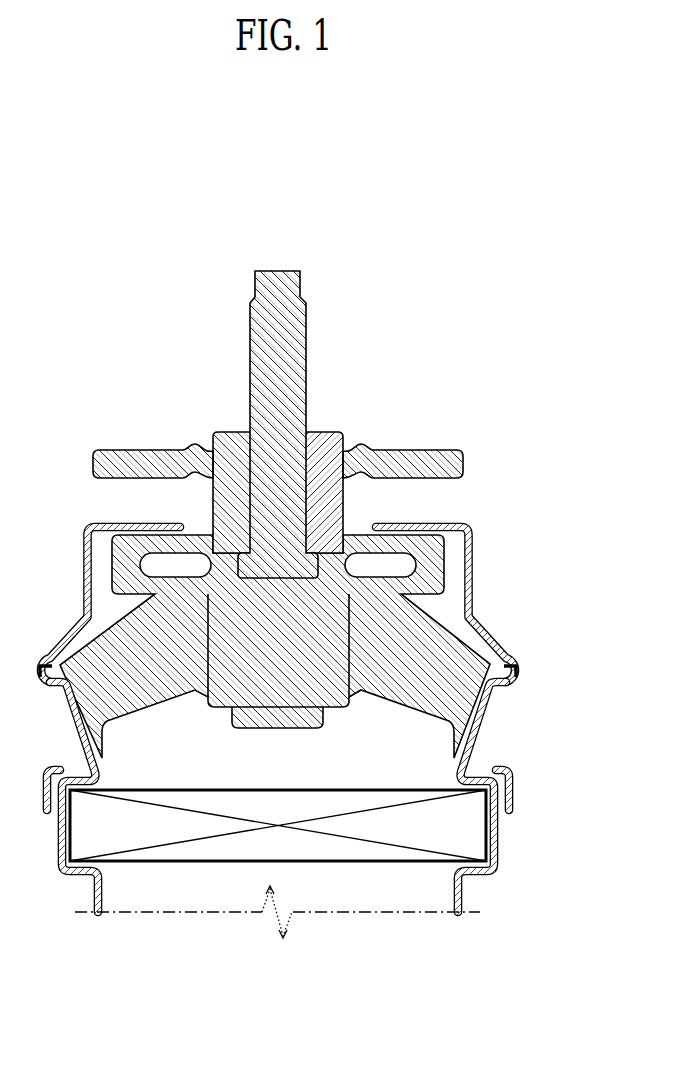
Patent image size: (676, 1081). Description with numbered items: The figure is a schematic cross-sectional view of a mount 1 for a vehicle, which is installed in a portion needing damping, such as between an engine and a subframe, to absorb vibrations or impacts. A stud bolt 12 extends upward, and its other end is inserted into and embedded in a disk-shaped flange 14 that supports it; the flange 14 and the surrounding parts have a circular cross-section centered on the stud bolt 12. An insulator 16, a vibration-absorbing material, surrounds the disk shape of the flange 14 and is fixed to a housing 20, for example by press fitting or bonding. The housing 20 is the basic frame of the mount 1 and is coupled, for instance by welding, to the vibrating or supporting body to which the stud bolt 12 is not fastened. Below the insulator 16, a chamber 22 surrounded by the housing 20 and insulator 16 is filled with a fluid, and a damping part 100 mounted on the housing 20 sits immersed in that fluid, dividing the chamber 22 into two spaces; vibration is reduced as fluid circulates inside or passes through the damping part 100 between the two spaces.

The mount 1 is at (315, 602).
The stud bolt 12 is at (296, 327).
The flange 14 is at (325, 432).
The insulator 16 is at (432, 652).
The housing 20 is at (521, 670).
The chamber 22 is at (428, 743).
The damping part 100 is at (497, 830).